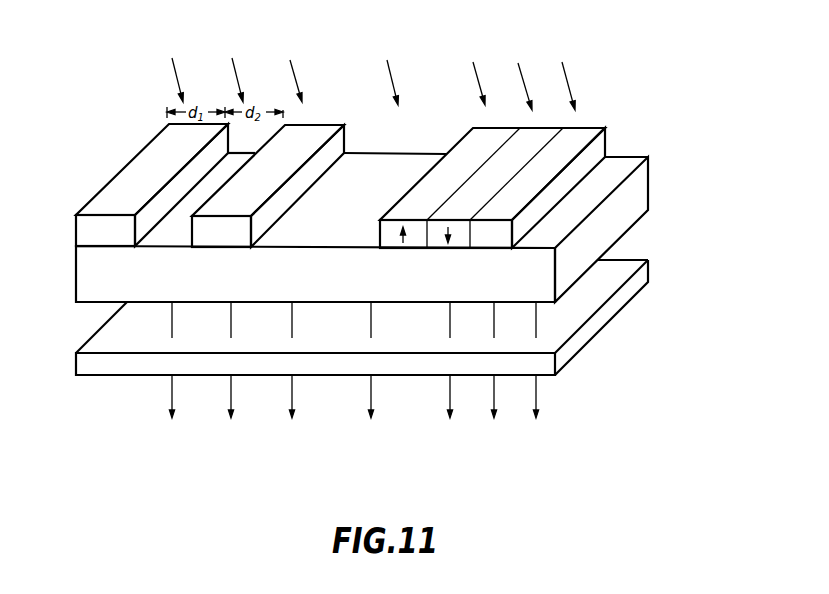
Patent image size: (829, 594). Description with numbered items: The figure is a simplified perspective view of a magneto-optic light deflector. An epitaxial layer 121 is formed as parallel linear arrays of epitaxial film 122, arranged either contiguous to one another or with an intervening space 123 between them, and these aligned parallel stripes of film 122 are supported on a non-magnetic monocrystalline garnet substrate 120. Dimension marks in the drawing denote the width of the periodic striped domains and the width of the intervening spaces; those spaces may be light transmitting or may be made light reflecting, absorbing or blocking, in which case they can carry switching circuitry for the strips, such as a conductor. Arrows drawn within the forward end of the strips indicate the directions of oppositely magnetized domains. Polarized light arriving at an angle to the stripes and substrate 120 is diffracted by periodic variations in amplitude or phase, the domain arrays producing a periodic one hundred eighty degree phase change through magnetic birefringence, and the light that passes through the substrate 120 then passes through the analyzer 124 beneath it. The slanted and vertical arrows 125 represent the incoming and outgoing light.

The non-magnetic monocrystalline garnet substrate 120 is at (652, 157).
The epitaxial layer 121 is at (612, 128).
The epitaxial film 122 is at (128, 182).
The intervening space 123 is at (422, 147).
The analyzer 124 is at (545, 363).
The light beam 125 is at (568, 75).